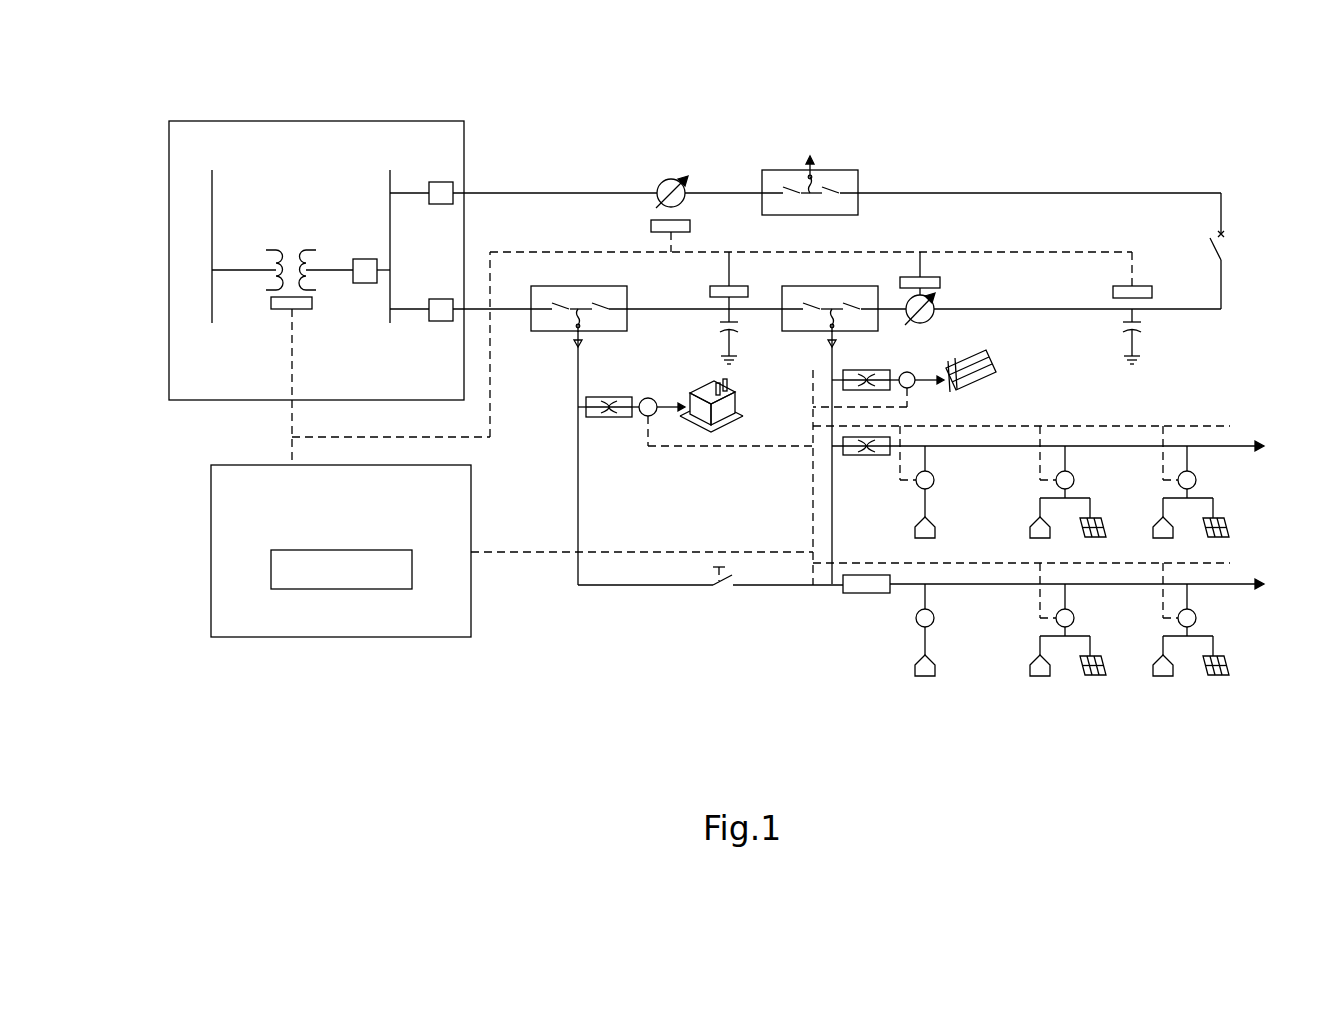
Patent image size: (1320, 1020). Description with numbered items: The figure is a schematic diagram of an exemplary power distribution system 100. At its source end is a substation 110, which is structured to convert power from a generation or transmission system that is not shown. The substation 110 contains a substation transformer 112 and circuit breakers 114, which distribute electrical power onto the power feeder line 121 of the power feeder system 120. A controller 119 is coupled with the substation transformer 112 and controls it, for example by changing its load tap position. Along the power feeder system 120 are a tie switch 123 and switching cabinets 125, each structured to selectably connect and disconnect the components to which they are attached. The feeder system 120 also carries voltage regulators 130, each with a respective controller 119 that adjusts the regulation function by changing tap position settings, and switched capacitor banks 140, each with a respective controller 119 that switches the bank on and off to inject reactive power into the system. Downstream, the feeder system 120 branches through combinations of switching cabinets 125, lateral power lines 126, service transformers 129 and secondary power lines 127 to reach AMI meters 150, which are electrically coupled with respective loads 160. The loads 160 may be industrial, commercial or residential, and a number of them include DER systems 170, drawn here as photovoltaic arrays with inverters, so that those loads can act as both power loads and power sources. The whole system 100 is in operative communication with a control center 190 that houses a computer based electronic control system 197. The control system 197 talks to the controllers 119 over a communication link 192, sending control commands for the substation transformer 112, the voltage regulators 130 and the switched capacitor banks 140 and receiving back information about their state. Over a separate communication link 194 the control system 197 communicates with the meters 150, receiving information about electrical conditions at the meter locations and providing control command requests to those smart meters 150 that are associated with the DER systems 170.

The power distribution system 100 is at (1214, 134).
The substation 110 is at (440, 121).
The substation transformer 112 is at (270, 288).
The circuit breakers 114 is at (365, 259).
The controller 119 is at (312, 304).
The power feeder system 120 is at (603, 166).
The power feeder line 121 is at (510, 193).
The tie switch 123 is at (1226, 240).
The switching cabinets 125 is at (848, 170).
The lateral power lines 126 is at (578, 490).
The secondary power lines 127 is at (1240, 446).
The service transformers 129 is at (600, 397).
The voltage regulators 130 is at (671, 179).
The switched capacitor banks 140 is at (720, 330).
The AMI meters 150 is at (648, 398).
The loads 160 is at (733, 406).
The DER systems 170 is at (1104, 535).
The control center 190 is at (211, 476).
The communication link 192 is at (278, 437).
The communication link 194 is at (555, 560).
The control system 197 is at (345, 550).